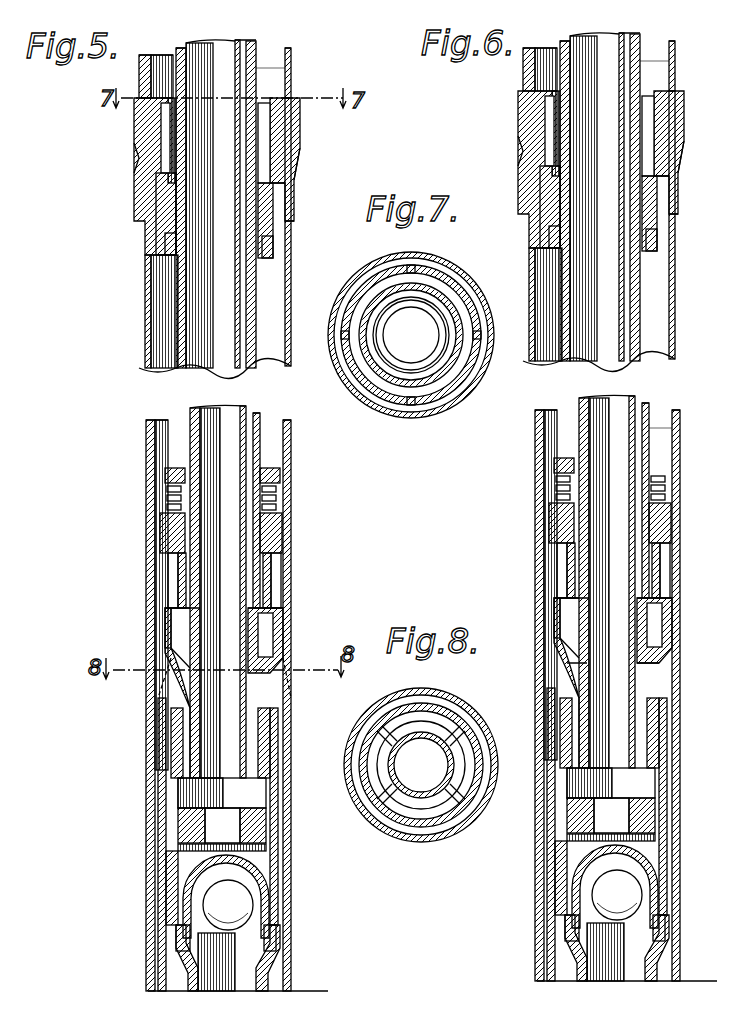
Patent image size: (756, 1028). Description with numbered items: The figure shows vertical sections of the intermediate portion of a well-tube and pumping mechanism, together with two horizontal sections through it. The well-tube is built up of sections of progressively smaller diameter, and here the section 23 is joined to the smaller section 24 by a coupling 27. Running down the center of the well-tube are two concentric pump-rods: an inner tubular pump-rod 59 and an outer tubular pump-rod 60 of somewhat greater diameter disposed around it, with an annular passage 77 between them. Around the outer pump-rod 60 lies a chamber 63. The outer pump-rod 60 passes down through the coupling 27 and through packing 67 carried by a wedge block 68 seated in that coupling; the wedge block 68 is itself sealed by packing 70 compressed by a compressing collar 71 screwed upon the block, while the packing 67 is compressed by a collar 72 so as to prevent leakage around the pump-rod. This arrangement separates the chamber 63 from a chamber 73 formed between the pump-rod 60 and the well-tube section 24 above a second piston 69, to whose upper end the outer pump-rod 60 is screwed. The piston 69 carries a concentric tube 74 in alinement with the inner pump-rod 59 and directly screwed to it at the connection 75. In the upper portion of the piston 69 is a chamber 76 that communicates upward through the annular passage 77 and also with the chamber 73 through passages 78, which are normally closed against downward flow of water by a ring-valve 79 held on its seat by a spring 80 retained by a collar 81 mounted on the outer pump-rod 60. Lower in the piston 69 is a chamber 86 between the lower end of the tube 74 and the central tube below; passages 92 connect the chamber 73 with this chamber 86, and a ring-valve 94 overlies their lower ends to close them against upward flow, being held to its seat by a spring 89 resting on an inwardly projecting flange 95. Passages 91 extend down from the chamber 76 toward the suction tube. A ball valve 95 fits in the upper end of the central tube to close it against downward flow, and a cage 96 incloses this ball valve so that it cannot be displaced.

In FIG. 5, the well-tube section 23 is at (283, 52).
In FIG. 6, the well-tube section 23 is at (693, 58).
In FIG. 7, the well-tube section 23 is at (448, 262).
In FIG. 5, the well-tube section 24 is at (283, 445).
In FIG. 6, the well-tube section 24 is at (626, 692).
In FIG. 8, the well-tube section 24 is at (470, 715).
In FIG. 5, the coupling 27 is at (288, 150).
In FIG. 6, the coupling 27 is at (623, 150).
In FIG. 5, the inner tubular pump-rod 59 is at (232, 262).
In FIG. 6, the inner tubular pump-rod 59 is at (599, 400).
In FIG. 7, the inner tubular pump-rod 59 is at (411, 335).
In FIG. 8, the inner tubular pump-rod 59 is at (421, 765).
In FIG. 5, the outer tubular pump-rod 60 is at (296, 420).
In FIG. 6, the outer tubular pump-rod 60 is at (620, 303).
In FIG. 7, the outer tubular pump-rod 60 is at (440, 316).
In FIG. 5, the chamber 63 is at (268, 72).
In FIG. 6, the chamber 63 is at (678, 60).
In FIG. 5, the packing 67 is at (265, 196).
In FIG. 6, the packing 67 is at (634, 208).
In FIG. 5, the wedge block 68 is at (284, 176).
In FIG. 6, the wedge block 68 is at (691, 182).
In FIG. 7, the wedge block 68 is at (450, 298).
In FIG. 5, the second piston 69 is at (275, 598).
In FIG. 6, the second piston 69 is at (635, 588).
In FIG. 8, the second piston 69 is at (440, 700).
In FIG. 5, the packing 70 is at (292, 130).
In FIG. 6, the packing 70 is at (623, 169).
In FIG. 5, the compressing collar 71 is at (275, 108).
In FIG. 6, the compressing collar 71 is at (637, 129).
In FIG. 7, the compressing collar 71 is at (458, 278).
In FIG. 5, the collar 72 is at (265, 228).
In FIG. 6, the collar 72 is at (639, 227).
In FIG. 5, the chamber 73 is at (272, 306).
In FIG. 6, the chamber 73 is at (683, 259).
In FIG. 5, the concentric tube 74 is at (255, 690).
In FIG. 8, the concentric tube 74 is at (392, 700).
In FIG. 5, the screwed connection 75 is at (250, 632).
In FIG. 6, the screwed connection 75 is at (642, 642).
In FIG. 8, the screwed connection 75 is at (450, 745).
In FIG. 5, the chamber 76 is at (170, 642).
In FIG. 6, the chamber 76 is at (600, 673).
In FIG. 5, the annular passage 77 is at (245, 503).
In FIG. 5, the passages 78 is at (165, 563).
In FIG. 6, the passages 78 is at (577, 570).
In FIG. 5, the ring-valve 79 is at (152, 524).
In FIG. 6, the ring-valve 79 is at (577, 523).
In FIG. 5, the spring 80 is at (159, 490).
In FIG. 6, the spring 80 is at (573, 486).
In FIG. 5, the collar 81 is at (157, 466).
In FIG. 6, the collar 81 is at (527, 460).
In FIG. 5, the chamber 86 is at (258, 785).
In FIG. 6, the chamber 86 is at (644, 844).
In FIG. 5, the spring 89 is at (172, 840).
In FIG. 6, the spring 89 is at (529, 866).
In FIG. 5, the passages 91 is at (172, 820).
In FIG. 6, the passages 91 is at (608, 813).
In FIG. 5, the passages 92 is at (262, 712).
In FIG. 6, the passages 92 is at (611, 834).
In FIG. 5, the ring-valve 94 is at (200, 810).
In FIG. 5, the ball valve 95 is at (258, 840).
In FIG. 6, the ball valve 95 is at (643, 884).
In FIG. 5, the cage 96 is at (190, 900).
In FIG. 6, the cage 96 is at (579, 925).